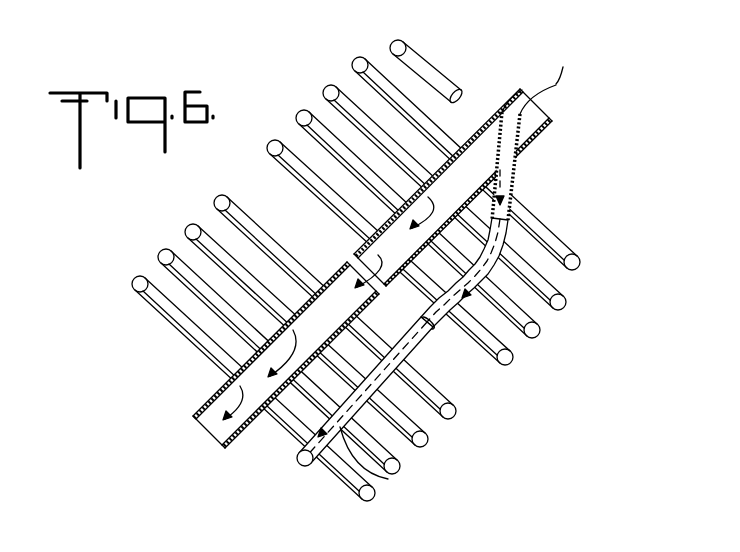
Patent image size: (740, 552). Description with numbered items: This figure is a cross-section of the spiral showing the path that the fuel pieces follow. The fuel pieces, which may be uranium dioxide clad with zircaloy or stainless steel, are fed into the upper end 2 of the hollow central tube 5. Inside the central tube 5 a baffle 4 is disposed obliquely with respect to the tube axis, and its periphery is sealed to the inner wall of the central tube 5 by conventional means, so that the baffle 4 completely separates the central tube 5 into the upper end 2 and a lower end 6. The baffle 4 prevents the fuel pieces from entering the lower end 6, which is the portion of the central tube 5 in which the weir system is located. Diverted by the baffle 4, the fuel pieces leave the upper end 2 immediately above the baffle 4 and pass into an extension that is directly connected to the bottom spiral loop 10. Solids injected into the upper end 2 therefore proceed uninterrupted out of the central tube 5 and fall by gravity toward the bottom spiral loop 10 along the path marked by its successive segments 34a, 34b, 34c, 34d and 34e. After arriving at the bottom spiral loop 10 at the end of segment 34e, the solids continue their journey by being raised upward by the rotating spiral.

The upper end of the central tube 2 is at (528, 131).
The baffle 4 is at (510, 149).
The hollow central tube 5 is at (478, 127).
The lower end of the central tube 6 is at (345, 282).
The bottom spiral loop 10 is at (143, 304).
The path of the fuel pieces 34a is at (523, 98).
The path of the fuel pieces 34b is at (514, 176).
The path of the fuel pieces 34c is at (487, 272).
The path of the fuel pieces 34d is at (407, 361).
The path of the fuel pieces 34e is at (388, 479).